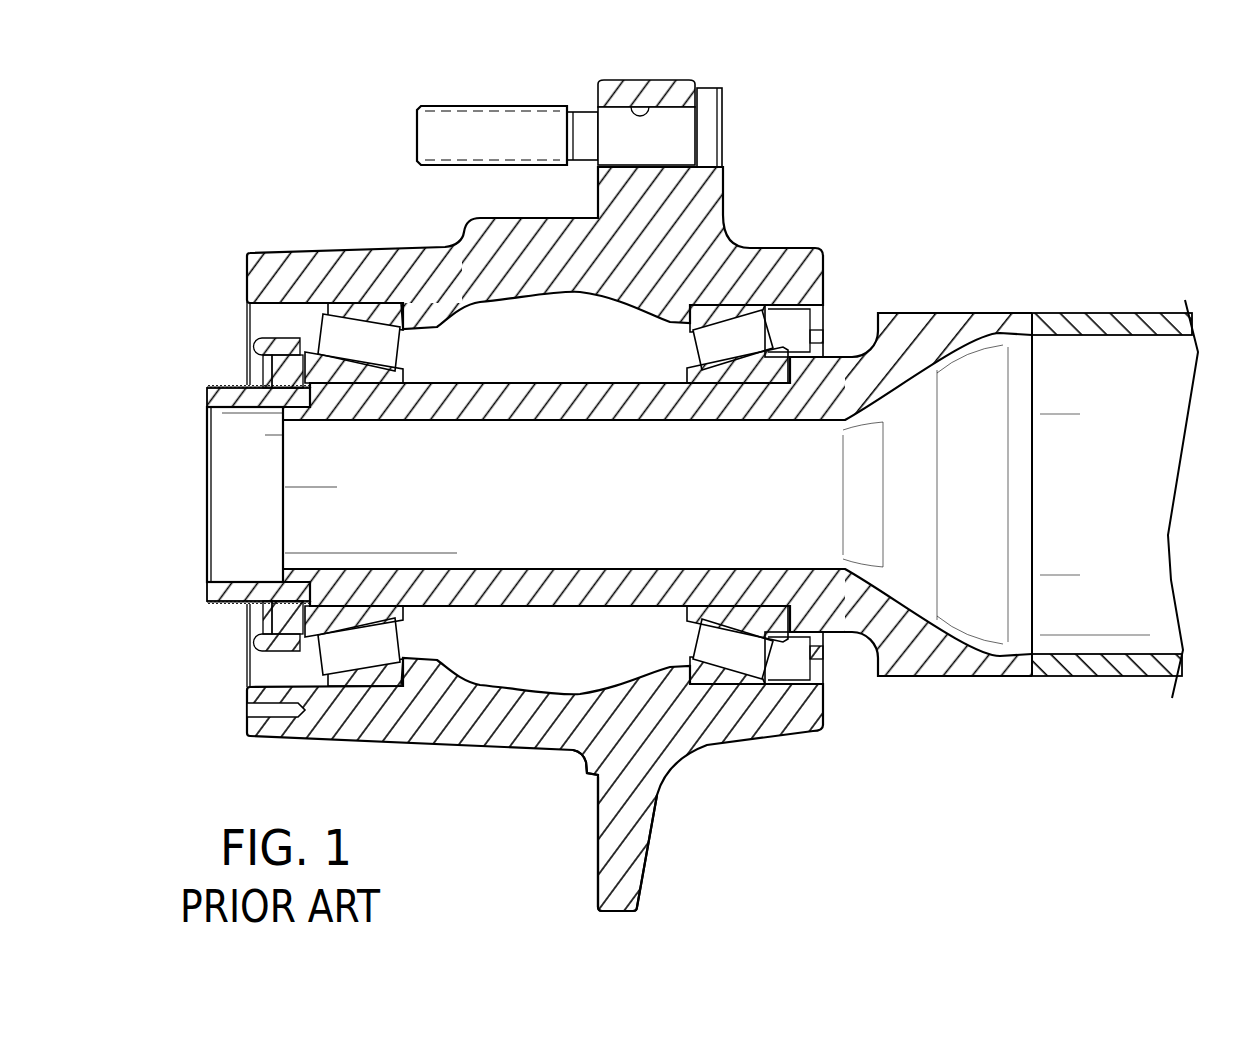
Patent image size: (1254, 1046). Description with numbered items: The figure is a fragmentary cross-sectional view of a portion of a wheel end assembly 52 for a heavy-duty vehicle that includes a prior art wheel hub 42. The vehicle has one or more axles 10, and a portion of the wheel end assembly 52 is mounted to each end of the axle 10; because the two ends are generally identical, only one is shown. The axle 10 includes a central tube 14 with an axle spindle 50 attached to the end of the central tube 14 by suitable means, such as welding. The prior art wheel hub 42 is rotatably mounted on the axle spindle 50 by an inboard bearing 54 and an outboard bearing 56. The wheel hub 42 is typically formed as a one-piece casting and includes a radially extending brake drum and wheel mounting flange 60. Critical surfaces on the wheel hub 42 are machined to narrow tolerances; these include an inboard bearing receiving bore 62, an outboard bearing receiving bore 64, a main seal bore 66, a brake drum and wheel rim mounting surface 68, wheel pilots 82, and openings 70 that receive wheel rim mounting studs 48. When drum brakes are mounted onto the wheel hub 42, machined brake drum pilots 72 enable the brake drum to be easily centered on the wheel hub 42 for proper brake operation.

The axle 10 is at (1033, 465).
The central tube 14 is at (1128, 678).
The prior art wheel hub 42 is at (576, 464).
The wheel rim mounting stud 48 is at (569, 84).
The axle spindle 50 is at (910, 312).
The wheel end assembly 52 is at (576, 456).
The inboard bearing 54 is at (764, 250).
The outboard bearing 56 is at (382, 303).
The brake drum and wheel mounting flange 60 is at (650, 826).
The inboard bearing receiving bore 62 is at (733, 684).
The outboard bearing receiving bore 64 is at (366, 688).
The main seal bore 66 is at (787, 686).
The brake drum and wheel rim mounting surface 68 is at (600, 97).
The opening 70 is at (673, 110).
The brake drum pilot 72 is at (590, 780).
The wheel pilot 82 is at (563, 218).